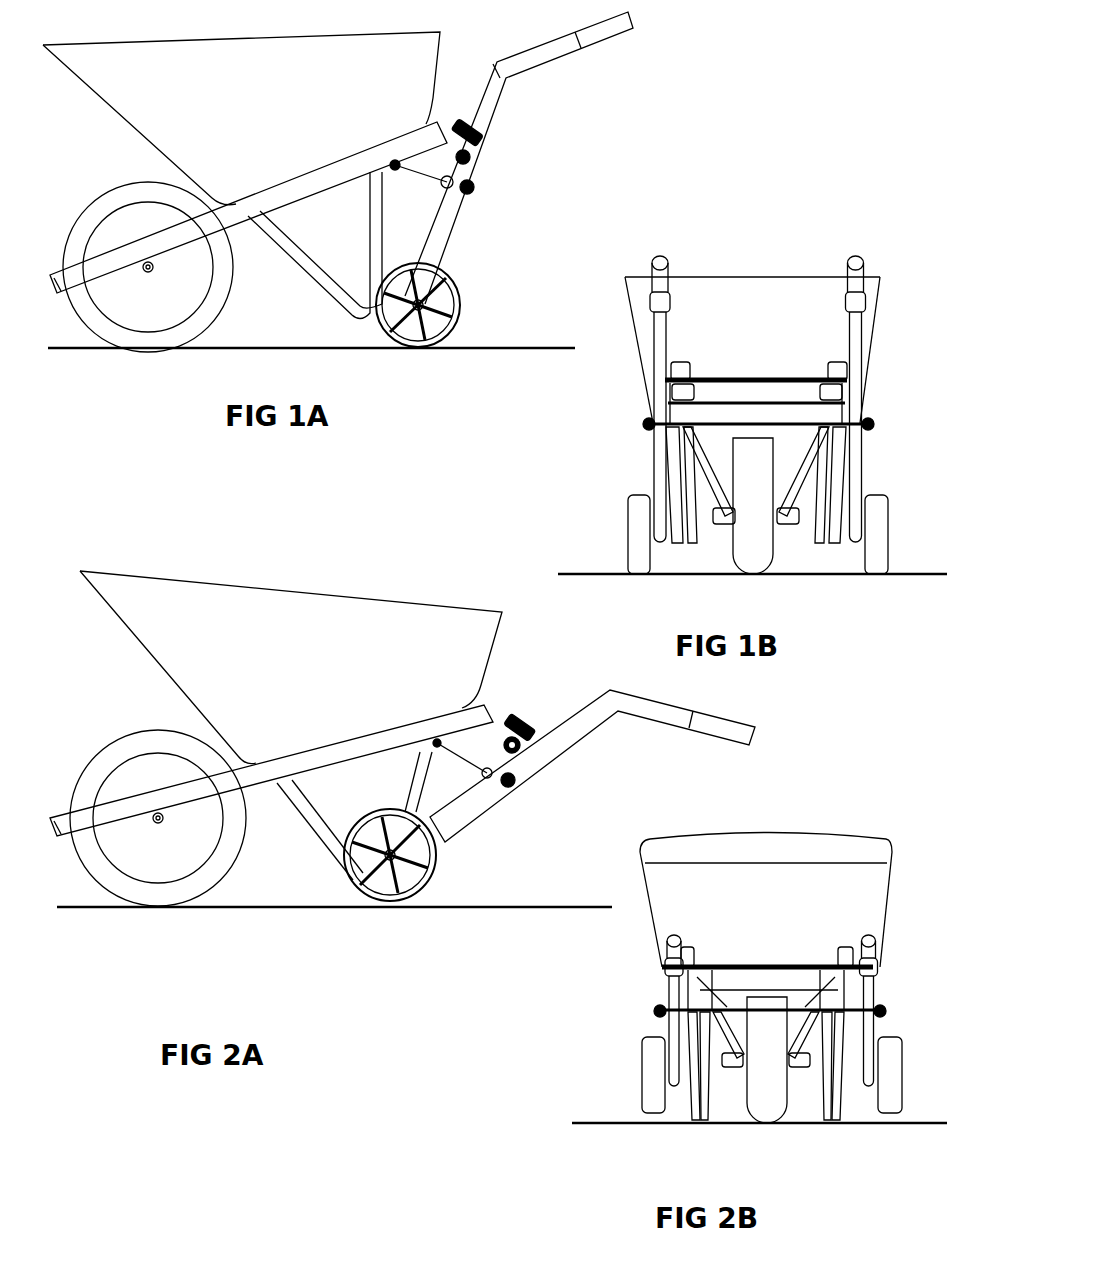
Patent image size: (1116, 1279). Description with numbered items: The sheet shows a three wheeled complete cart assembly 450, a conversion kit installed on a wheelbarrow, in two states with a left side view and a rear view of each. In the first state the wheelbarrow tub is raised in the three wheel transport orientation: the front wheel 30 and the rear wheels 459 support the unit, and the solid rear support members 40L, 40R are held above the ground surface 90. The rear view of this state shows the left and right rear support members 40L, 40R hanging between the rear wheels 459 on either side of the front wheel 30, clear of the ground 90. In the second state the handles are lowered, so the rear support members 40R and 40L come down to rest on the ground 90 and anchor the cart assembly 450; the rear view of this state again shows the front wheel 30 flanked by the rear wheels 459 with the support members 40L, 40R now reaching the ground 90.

In FIG. 1A, the front wheel 30 is at (118, 181).
In FIG. 1B, the front wheel 30 is at (734, 540).
In FIG. 2A, the front wheel 30 is at (138, 727).
In FIG. 2B, the front wheel 30 is at (746, 1096).
In FIG. 1A, the left rear support member 40L is at (313, 281).
In FIG. 1B, the left rear support member 40L is at (677, 478).
In FIG. 2A, the left rear support member 40L is at (312, 838).
In FIG. 2B, the left rear support member 40L is at (696, 1056).
In FIG. 1B, the right rear support member 40R is at (833, 470).
In FIG. 2B, the right rear support member 40R is at (849, 1050).
In FIG. 1A, the ground surface 90 is at (356, 352).
In FIG. 2A, the ground surface 90 is at (508, 903).
In FIG. 1A, the three wheeled complete cart assembly 450 is at (556, 132).
In FIG. 2A, the three wheeled complete cart assembly 450 is at (330, 935).
In FIG. 1A, the rear wheels 459 is at (464, 287).
In FIG. 1B, the rear wheels 459 is at (626, 540).
In FIG. 2A, the rear wheels 459 is at (425, 891).
In FIG. 2B, the rear wheels 459 is at (640, 1099).